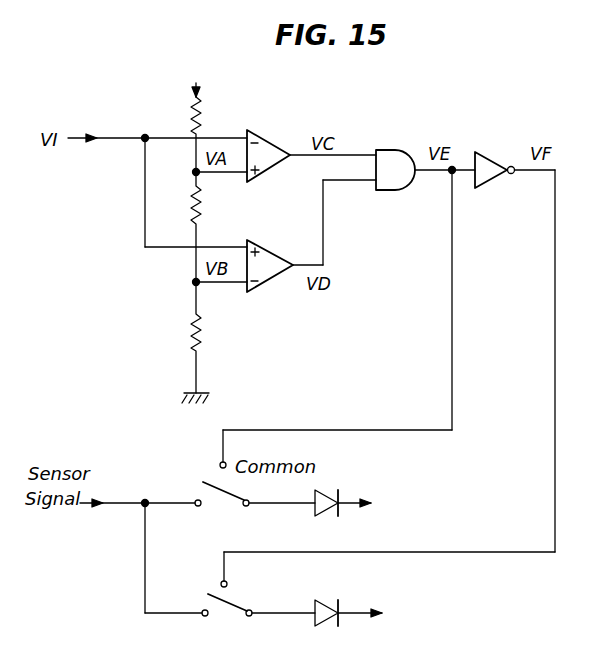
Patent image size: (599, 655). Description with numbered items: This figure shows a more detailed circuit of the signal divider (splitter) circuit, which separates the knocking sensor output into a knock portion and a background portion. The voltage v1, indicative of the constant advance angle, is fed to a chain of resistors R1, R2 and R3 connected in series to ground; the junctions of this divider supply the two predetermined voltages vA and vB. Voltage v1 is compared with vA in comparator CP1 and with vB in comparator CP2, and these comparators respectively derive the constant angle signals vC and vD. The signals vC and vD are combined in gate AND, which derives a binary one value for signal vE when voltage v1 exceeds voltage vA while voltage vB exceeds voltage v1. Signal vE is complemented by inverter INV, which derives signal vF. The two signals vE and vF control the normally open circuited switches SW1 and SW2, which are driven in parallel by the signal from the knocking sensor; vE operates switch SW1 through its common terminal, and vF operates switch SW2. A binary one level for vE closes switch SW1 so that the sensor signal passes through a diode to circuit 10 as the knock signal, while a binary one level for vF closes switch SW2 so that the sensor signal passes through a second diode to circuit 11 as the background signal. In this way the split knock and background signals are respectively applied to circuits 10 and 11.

The resistor R1 is at (199, 119).
The resistor R2 is at (214, 227).
The resistor R3 is at (200, 328).
The comparator CP1 is at (272, 146).
The comparator CP2 is at (275, 255).
The gate AND is at (393, 158).
The inverter INV is at (487, 160).
The normally open circuited switch SW1 is at (234, 499).
The normally open circuited switch SW2 is at (211, 614).
The circuit 10 is at (408, 513).
The circuit 11 is at (418, 620).